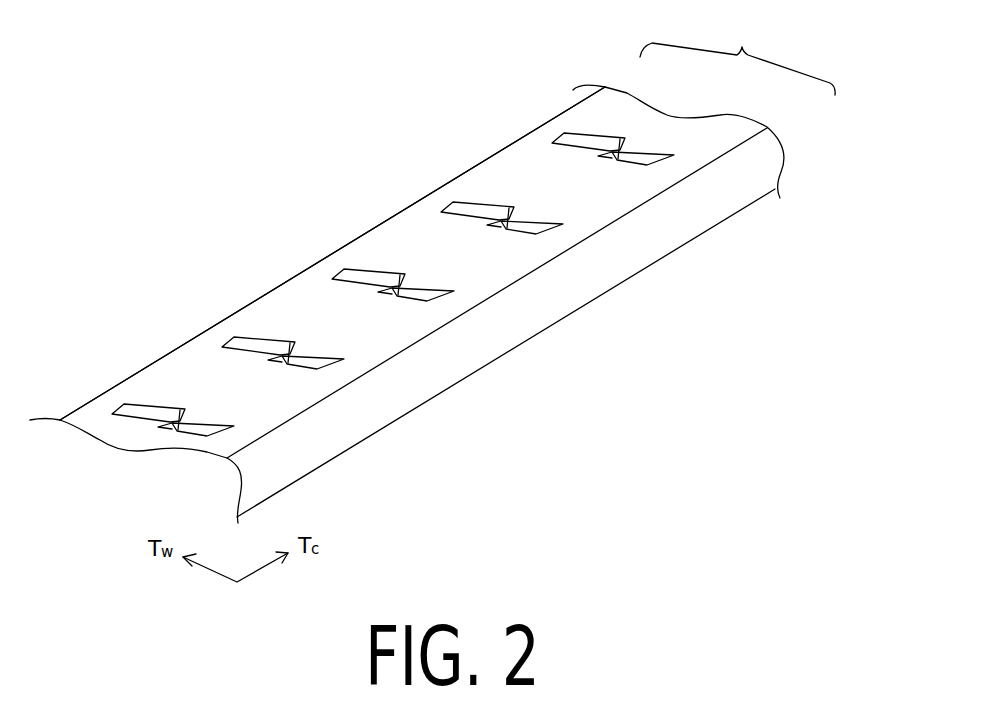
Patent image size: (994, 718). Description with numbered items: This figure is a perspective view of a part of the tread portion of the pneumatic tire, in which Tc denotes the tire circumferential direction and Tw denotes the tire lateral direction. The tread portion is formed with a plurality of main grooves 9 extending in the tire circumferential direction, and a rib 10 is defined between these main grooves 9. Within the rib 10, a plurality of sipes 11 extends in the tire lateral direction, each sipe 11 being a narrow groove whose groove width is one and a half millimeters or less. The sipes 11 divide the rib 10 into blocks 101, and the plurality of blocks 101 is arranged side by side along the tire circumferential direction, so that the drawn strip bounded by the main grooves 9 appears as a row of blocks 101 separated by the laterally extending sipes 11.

The main groove 9 is at (493, 140).
The rib 10 is at (737, 52).
The sipe 11 is at (537, 222).
The block 101 is at (440, 243).